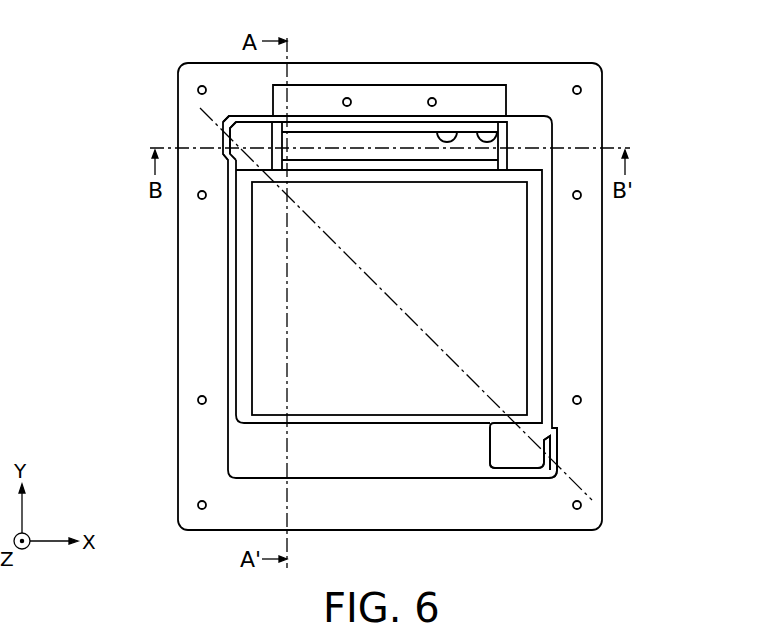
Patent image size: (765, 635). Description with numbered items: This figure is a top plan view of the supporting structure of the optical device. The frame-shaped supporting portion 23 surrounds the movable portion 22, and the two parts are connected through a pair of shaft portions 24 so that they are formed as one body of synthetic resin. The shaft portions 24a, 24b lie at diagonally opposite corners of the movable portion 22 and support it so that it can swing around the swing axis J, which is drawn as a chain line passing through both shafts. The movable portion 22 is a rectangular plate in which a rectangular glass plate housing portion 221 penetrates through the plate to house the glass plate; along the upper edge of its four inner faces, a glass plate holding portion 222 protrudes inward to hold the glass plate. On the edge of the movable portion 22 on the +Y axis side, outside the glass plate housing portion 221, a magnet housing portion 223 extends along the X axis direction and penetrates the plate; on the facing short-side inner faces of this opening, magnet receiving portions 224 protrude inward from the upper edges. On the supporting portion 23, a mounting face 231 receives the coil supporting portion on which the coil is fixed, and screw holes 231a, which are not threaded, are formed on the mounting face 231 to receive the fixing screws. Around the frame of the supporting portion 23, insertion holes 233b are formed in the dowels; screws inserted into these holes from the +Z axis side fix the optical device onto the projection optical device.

The movable portion 22 is at (535, 273).
The supporting portion 23 is at (603, 303).
The shaft portions 24 is at (374, 297).
The shaft portion 24a is at (233, 119).
The shaft portion 24b is at (550, 470).
The glass plate housing portion 221 is at (496, 298).
The glass plate holding portion 222 is at (524, 229).
The magnet housing portion 223 is at (453, 131).
The magnet receiving portions 224 is at (483, 131).
The mounting face 231 is at (326, 95).
The screw hole 231a is at (430, 99).
The insertion hole 233b is at (583, 399).
The swing axis J is at (422, 323).